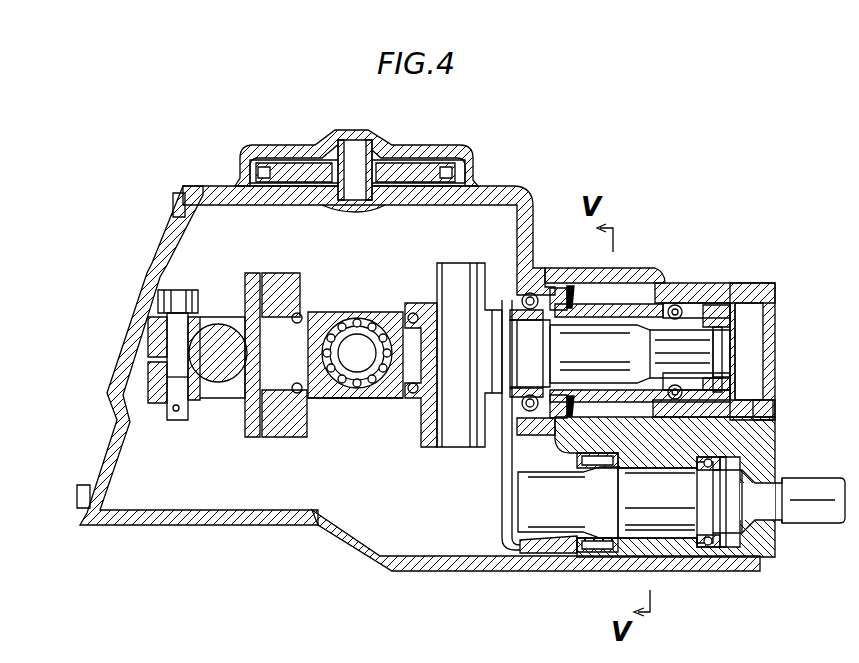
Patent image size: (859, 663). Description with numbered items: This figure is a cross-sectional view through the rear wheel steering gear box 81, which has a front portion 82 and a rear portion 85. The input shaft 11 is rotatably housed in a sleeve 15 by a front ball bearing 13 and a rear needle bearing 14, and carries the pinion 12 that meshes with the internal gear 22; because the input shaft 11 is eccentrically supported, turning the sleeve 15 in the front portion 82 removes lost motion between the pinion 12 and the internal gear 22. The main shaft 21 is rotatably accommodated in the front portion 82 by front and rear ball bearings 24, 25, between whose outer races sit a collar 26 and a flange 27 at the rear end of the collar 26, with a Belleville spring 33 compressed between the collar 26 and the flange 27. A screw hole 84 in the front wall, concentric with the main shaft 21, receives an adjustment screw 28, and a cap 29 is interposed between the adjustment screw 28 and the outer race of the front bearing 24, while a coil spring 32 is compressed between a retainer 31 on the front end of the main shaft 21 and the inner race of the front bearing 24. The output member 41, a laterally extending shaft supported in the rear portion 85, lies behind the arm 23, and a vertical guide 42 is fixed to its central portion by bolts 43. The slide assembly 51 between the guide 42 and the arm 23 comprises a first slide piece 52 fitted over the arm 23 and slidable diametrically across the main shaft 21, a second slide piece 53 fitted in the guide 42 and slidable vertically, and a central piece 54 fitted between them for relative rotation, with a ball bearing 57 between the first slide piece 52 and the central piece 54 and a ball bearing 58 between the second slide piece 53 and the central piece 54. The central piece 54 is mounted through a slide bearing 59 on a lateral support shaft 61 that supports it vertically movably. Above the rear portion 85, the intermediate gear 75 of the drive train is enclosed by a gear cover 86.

The input shaft 11 is at (676, 503).
The pinion 12 is at (546, 470).
The front ball bearing 13 is at (708, 548).
The rear needle bearing 14 is at (600, 548).
The sleeve 15 is at (667, 557).
The main shaft 21 is at (619, 358).
The internal gear 22 is at (548, 530).
The arm 23 is at (457, 264).
The front ball bearing 24 is at (677, 305).
The rear ball bearing 25 is at (531, 293).
The collar 26 is at (627, 303).
The flange 27 is at (559, 287).
The adjustment screw 28 is at (777, 353).
The cap 29 is at (735, 337).
The retainer 31 is at (718, 387).
The coil spring 32 is at (704, 318).
The Belleville spring 33 is at (574, 294).
The output member 41 is at (216, 333).
The vertical guide 42 is at (260, 439).
The bolts 43 is at (176, 292).
The slide assembly 51 is at (345, 446).
The first slide piece 52 is at (440, 447).
The second slide piece 53 is at (281, 282).
The central piece 54 is at (385, 314).
The ball bearing 57 is at (413, 397).
The ball bearing 58 is at (298, 312).
The slide bearing 59 is at (377, 399).
The lateral support shaft 61 is at (345, 330).
The intermediate gear 75 is at (463, 153).
The rear wheel steering gear box 81 is at (400, 586).
The front portion of the rear wheel steering gear box 82 is at (660, 270).
The screw hole 84 is at (753, 402).
The rear portion of the rear wheel steering gear box 85 is at (170, 523).
The gear cover 86 is at (393, 145).